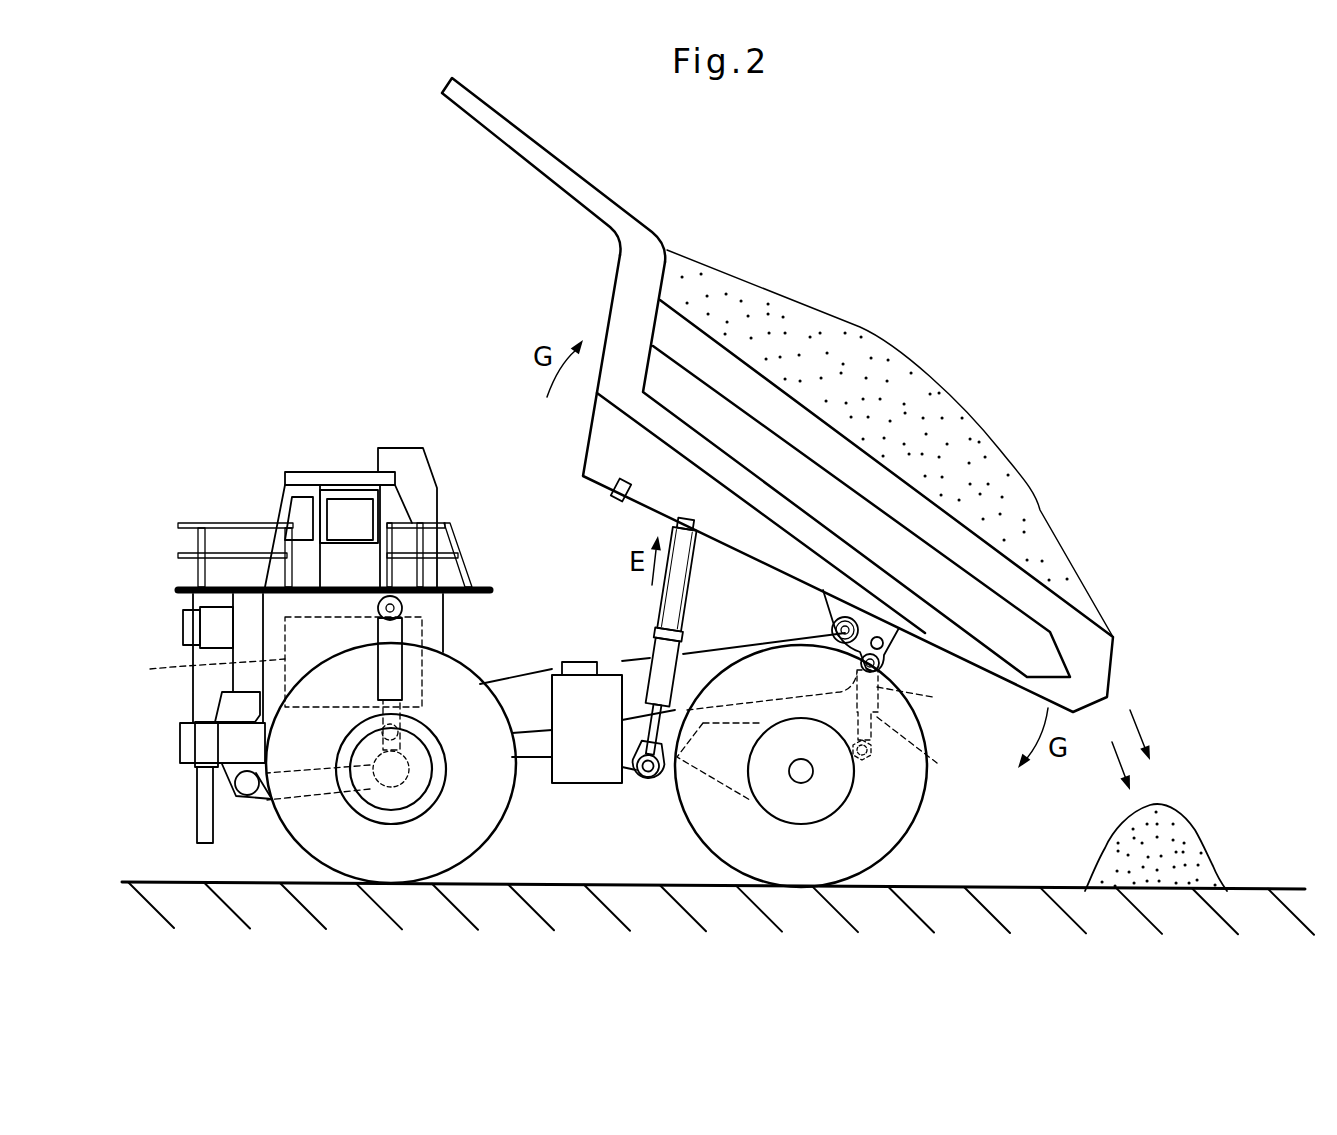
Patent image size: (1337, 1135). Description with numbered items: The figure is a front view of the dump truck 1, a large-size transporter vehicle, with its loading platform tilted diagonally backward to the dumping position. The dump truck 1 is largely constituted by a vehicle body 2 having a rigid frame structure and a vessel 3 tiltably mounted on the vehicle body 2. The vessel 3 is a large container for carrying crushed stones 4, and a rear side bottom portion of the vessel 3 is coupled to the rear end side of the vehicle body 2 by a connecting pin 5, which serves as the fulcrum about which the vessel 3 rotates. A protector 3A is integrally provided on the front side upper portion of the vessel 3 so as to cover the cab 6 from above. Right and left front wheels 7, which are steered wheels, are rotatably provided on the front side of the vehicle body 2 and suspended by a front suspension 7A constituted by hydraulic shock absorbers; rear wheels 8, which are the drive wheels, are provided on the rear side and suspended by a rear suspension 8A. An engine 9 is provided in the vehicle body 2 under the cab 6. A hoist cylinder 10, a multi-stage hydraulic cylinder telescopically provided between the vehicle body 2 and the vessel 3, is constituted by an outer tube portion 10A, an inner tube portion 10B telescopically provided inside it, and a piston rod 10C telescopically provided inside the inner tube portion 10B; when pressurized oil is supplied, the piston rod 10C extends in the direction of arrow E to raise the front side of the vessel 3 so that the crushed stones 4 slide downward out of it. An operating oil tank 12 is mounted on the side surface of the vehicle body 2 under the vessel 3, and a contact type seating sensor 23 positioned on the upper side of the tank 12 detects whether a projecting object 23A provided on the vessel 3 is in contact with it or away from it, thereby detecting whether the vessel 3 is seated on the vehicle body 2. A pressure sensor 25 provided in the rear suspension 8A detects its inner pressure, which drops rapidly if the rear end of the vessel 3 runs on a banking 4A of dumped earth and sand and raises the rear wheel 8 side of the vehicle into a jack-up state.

The dump truck 1 is at (369, 440).
The vehicle body 2 is at (530, 722).
The vessel 3 is at (1000, 568).
The protector 3A is at (530, 162).
The crushed stones 4 is at (860, 327).
The banking 4A is at (1197, 828).
The connecting pin 5 is at (838, 628).
The cab 6 is at (292, 488).
The front wheel 7 is at (298, 827).
The front suspension 7A is at (400, 640).
The rear wheel 8 is at (892, 828).
The rear suspension 8A is at (873, 752).
The engine 9 is at (249, 729).
The hoist cylinder 10 is at (665, 684).
The outer tube portion 10A is at (650, 607).
The inner tube portion 10B is at (659, 691).
The piston rod 10C is at (648, 760).
The operating oil tank 12 is at (578, 770).
The seating sensor 23 is at (574, 661).
The projecting object 23A is at (611, 492).
The pressure sensor 25 is at (880, 682).